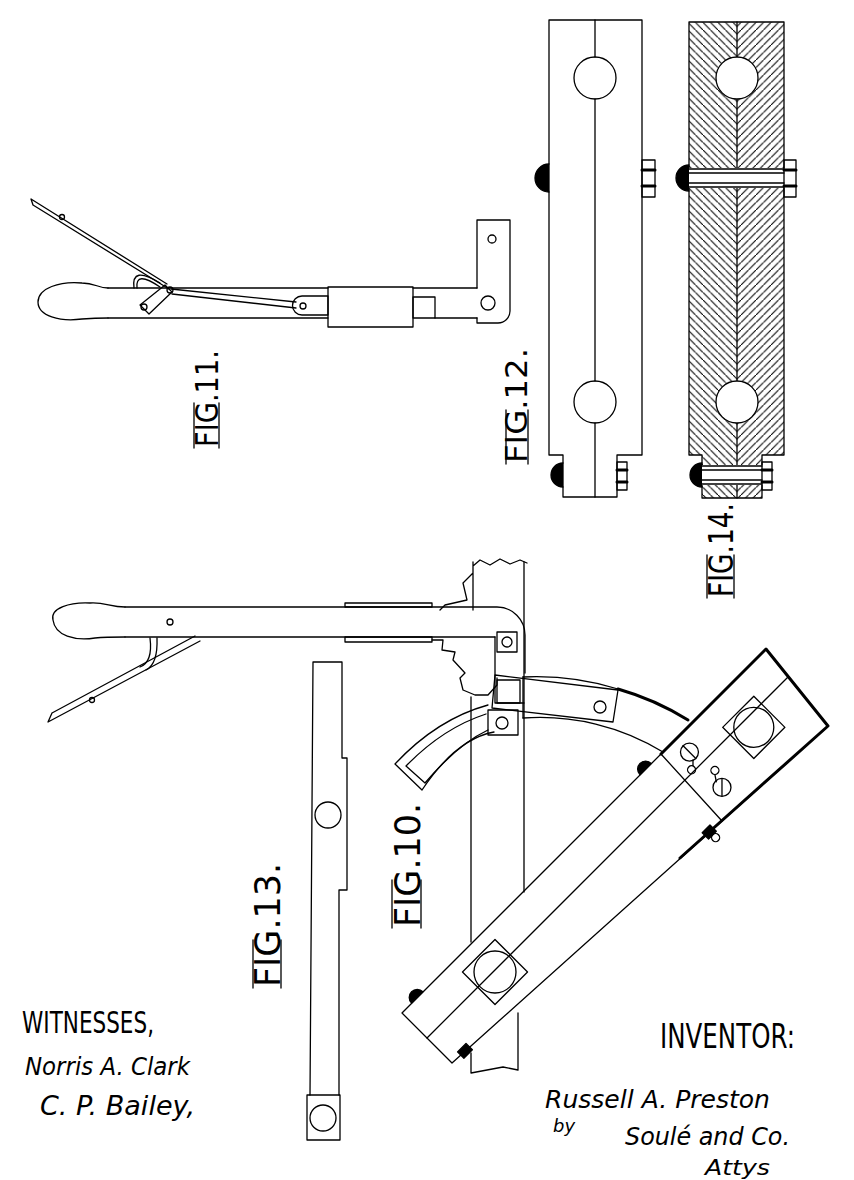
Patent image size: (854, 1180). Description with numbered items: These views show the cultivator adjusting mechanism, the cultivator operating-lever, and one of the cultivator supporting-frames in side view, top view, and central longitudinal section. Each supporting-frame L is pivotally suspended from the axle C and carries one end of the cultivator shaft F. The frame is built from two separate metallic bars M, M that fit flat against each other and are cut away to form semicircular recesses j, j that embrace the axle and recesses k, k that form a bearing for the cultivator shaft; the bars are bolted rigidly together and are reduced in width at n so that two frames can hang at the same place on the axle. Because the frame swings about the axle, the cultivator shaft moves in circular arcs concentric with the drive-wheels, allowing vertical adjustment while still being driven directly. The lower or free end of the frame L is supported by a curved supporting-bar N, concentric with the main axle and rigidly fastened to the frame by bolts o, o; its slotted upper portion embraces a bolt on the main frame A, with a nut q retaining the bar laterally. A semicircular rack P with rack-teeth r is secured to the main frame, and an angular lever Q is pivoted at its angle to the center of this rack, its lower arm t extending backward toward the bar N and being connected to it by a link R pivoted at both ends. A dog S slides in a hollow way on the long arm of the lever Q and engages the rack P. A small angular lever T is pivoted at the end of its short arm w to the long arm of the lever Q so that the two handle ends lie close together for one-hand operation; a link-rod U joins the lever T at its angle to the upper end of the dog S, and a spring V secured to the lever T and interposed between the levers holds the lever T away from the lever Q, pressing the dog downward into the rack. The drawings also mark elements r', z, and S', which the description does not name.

In FIG. 10, the main frame A is at (497, 817).
In FIG. 10, the semicircular rack P is at (443, 583).
In FIG. 10, the pin r' is at (438, 590).
In FIG. 10, the dog S is at (289, 638).
In FIG. 11, the dog S is at (257, 301).
In FIG. 10, the angular lever Q is at (419, 646).
In FIG. 11, the angular lever Q is at (482, 282).
In FIG. 10, the reduced-width portion of bars n is at (383, 603).
In FIG. 11, the reduced-width portion of bars n is at (370, 307).
In FIG. 13, the reduced-width portion of bars n is at (348, 989).
In FIG. 10, the lower arm of angular lever t is at (508, 650).
In FIG. 11, the lower arm of angular lever t is at (492, 233).
In FIG. 10, the small angular lever T is at (124, 686).
In FIG. 11, the small angular lever T is at (102, 246).
In FIG. 10, the spring V is at (136, 654).
In FIG. 11, the spring V is at (130, 276).
In FIG. 10, the link R is at (556, 682).
In FIG. 10, the bolts o is at (502, 730).
In FIG. 10, the nut q is at (518, 733).
In FIG. 10, the curved supporting-bar N is at (592, 733).
In FIG. 10, the rack-teeth r is at (444, 747).
In FIG. 11, the rack-teeth r is at (92, 223).
In FIG. 10, the supporting-frame L is at (615, 856).
In FIG. 12, the supporting-frame L is at (585, 258).
In FIG. 10, the metallic bars M is at (760, 657).
In FIG. 12, the metallic bars M is at (601, 228).
In FIG. 14, the metallic bars M is at (692, 258).
In FIG. 13, the metallic bars M is at (327, 901).
In FIG. 10, the cultivator shaft F is at (754, 727).
In FIG. 10, the axle C is at (479, 998).
In FIG. 10, the bolt z is at (640, 767).
In FIG. 12, the bolt z is at (589, 325).
In FIG. 14, the bolt z is at (730, 325).
In FIG. 11, the slide S' is at (424, 291).
In FIG. 11, the short arm of small lever w is at (147, 316).
In FIG. 11, the link-rod U is at (255, 292).
In FIG. 12, the semicircular recesses for cultivator-shaft k is at (595, 78).
In FIG. 14, the semicircular recesses for cultivator-shaft k is at (737, 78).
In FIG. 12, the semicircular recesses for axle j is at (595, 402).
In FIG. 14, the semicircular recesses for axle j is at (737, 402).